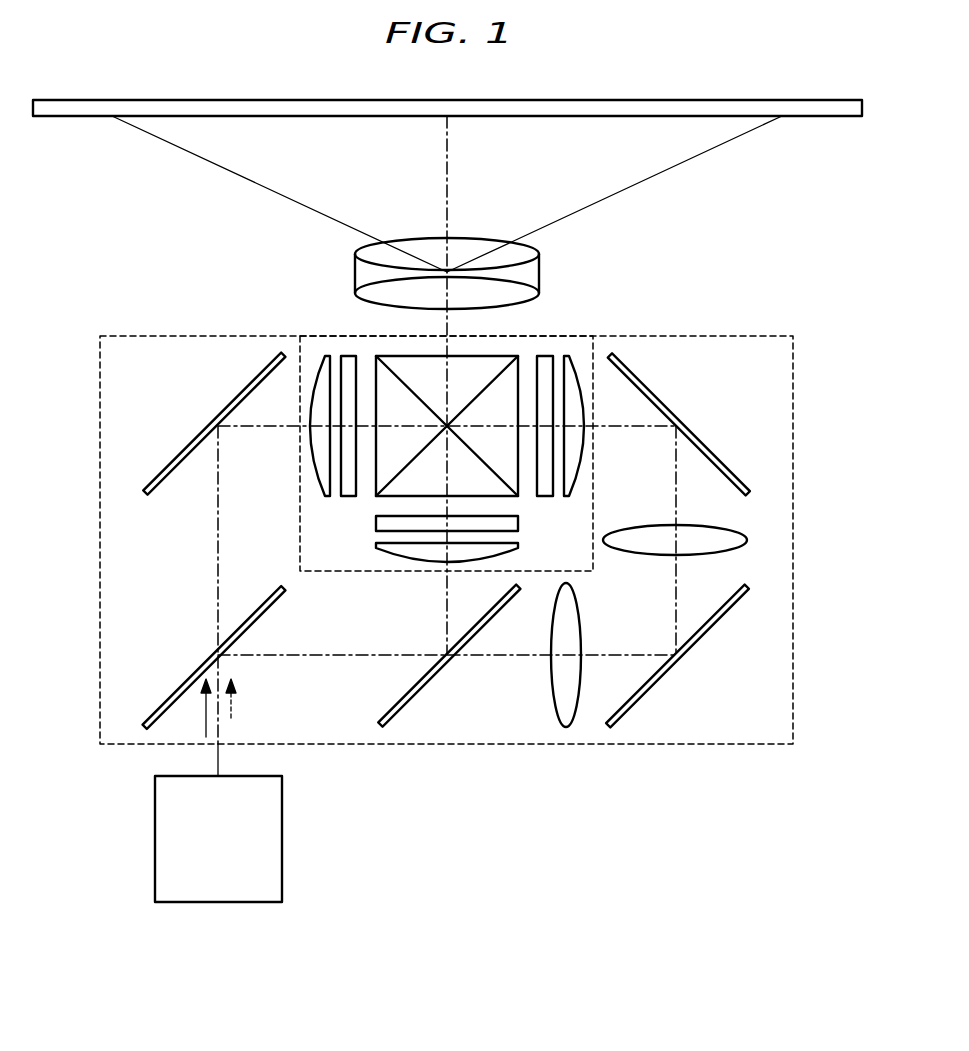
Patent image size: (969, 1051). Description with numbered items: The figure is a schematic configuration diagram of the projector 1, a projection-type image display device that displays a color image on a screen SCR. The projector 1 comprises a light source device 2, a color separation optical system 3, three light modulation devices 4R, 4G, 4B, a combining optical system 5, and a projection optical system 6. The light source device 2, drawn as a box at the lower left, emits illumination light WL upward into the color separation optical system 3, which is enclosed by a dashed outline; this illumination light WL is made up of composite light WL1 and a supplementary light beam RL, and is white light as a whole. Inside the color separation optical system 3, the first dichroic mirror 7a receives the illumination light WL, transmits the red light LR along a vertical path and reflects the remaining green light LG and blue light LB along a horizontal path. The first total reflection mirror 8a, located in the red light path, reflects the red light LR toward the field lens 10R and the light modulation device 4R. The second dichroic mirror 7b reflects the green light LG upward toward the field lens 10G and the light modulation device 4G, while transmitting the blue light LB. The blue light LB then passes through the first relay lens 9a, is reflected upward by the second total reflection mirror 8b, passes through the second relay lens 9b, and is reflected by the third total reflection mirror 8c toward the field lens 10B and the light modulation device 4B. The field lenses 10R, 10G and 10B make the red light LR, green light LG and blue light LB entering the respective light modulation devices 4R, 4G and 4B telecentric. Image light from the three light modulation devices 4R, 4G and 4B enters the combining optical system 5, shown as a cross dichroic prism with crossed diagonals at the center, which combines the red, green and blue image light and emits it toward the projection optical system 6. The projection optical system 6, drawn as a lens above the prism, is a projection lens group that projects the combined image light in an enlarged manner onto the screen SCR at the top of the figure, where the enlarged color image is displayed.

The projector 1 is at (799, 314).
The light source device 2 is at (282, 872).
The color separation optical system 3 is at (100, 483).
The light modulation device 4R is at (348, 353).
The light modulation device 4G is at (376, 520).
The light modulation device 4B is at (545, 353).
The combining optical system 5 is at (470, 362).
The projection optical system 6 is at (428, 250).
The first dichroic mirror 7a is at (178, 690).
The second dichroic mirror 7b is at (423, 687).
The first total reflection mirror 8a is at (192, 440).
The second total reflection mirror 8b is at (703, 637).
The third total reflection mirror 8c is at (705, 442).
The first relay lens 9a is at (552, 677).
The second relay lens 9b is at (737, 535).
The field lens 10R is at (325, 353).
The field lens 10G is at (380, 546).
The field lens 10B is at (570, 353).
The screen SCR is at (828, 117).
The illumination light WL is at (367, 752).
The composite light WL1 is at (231, 718).
The supplementary light beam RL is at (206, 737).
The red light LR is at (218, 563).
The green light LG is at (445, 610).
The blue light LB is at (675, 600).